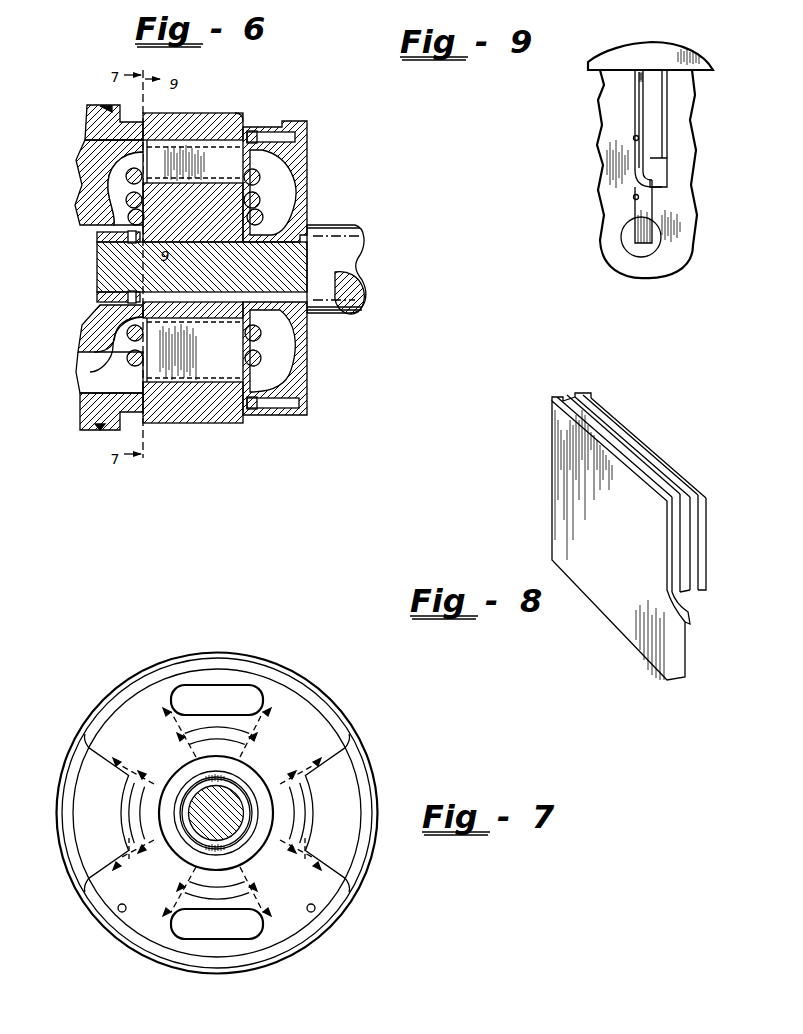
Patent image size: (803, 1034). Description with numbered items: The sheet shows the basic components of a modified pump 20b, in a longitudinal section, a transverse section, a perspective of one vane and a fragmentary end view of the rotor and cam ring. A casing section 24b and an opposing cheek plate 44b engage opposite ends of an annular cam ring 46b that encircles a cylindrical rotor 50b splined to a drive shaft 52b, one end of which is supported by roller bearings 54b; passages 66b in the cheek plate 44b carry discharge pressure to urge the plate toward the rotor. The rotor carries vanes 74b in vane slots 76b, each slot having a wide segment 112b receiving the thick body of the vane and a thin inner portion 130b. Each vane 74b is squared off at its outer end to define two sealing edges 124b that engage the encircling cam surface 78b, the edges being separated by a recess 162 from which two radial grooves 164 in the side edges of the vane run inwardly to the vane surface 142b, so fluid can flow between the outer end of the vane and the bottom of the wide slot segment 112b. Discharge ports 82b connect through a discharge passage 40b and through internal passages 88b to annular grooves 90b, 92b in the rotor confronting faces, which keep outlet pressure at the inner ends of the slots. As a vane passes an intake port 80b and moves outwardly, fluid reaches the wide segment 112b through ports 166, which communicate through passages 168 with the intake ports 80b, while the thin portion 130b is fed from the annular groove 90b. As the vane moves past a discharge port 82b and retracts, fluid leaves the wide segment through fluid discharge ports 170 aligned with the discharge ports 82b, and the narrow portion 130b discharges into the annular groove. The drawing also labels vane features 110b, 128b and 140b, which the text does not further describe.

In FIG. 6, the pump 20b is at (67, 118).
In FIG. 6, the casing section 24b is at (95, 323).
In FIG. 7, the casing section 24b is at (325, 902).
In FIG. 6, the discharge passage 40b is at (108, 178).
In FIG. 7, the discharge passage 40b is at (200, 722).
In FIG. 6, the cheek plate 44b is at (300, 125).
In FIG. 6, the cam ring 46b is at (222, 132).
In FIG. 9, the cam ring 46b is at (600, 64).
In FIG. 6, the rotor 50b is at (202, 310).
In FIG. 9, the rotor 50b is at (612, 265).
In FIG. 6, the drive shaft 52b is at (335, 258).
In FIG. 7, the drive shaft 52b is at (207, 828).
In FIG. 6, the roller bearings 54b is at (112, 242).
In FIG. 6, the passages 66b is at (283, 138).
In FIG. 6, the vane 74b is at (168, 170).
In FIG. 8, the vane 74b is at (550, 500).
In FIG. 9, the vane 74b is at (631, 110).
In FIG. 9, the vane slot 76b is at (633, 138).
In FIG. 9, the cam surface 78b is at (605, 72).
In FIG. 7, the intake port 80b is at (86, 797).
In FIG. 6, the discharge port 82b is at (92, 158).
In FIG. 7, the discharge port 82b is at (217, 689).
In FIG. 6, the internal passages 88b is at (275, 195).
In FIG. 6, the annular groove 90b is at (258, 215).
In FIG. 6, the annular groove 92b is at (128, 221).
In FIG. 7, the annular groove 92b is at (238, 767).
In FIG. 8, the rib 110b is at (706, 571).
In FIG. 9, the rib 110b is at (652, 100).
In FIG. 9, the wide vane slot segment 112b is at (658, 177).
In FIG. 8, the sealing edges 124b is at (558, 408).
In FIG. 9, the sealing edges 124b is at (633, 68).
In FIG. 8, the lower plate portion 128b is at (682, 648).
In FIG. 9, the lower plate portion 128b is at (645, 210).
In FIG. 9, the thin inner portion of vane slot 130b is at (633, 197).
In FIG. 8, the plate corner 140b is at (680, 680).
In FIG. 9, the plate corner 140b is at (645, 246).
In FIG. 8, the vane surface 142b is at (690, 597).
In FIG. 9, the vane surface 142b is at (658, 165).
In FIG. 6, the recess 162 is at (178, 157).
In FIG. 8, the recess 162 is at (630, 452).
In FIG. 9, the recess 162 is at (650, 70).
In FIG. 6, the radial grooves 164 is at (262, 158).
In FIG. 8, the radial grooves 164 is at (683, 548).
In FIG. 9, the radial grooves 164 is at (650, 125).
In FIG. 7, the ports 166 is at (138, 795).
In FIG. 7, the passages 168 is at (214, 819).
In FIG. 6, the fluid discharge ports 170 is at (138, 190).
In FIG. 7, the fluid discharge ports 170 is at (242, 735).